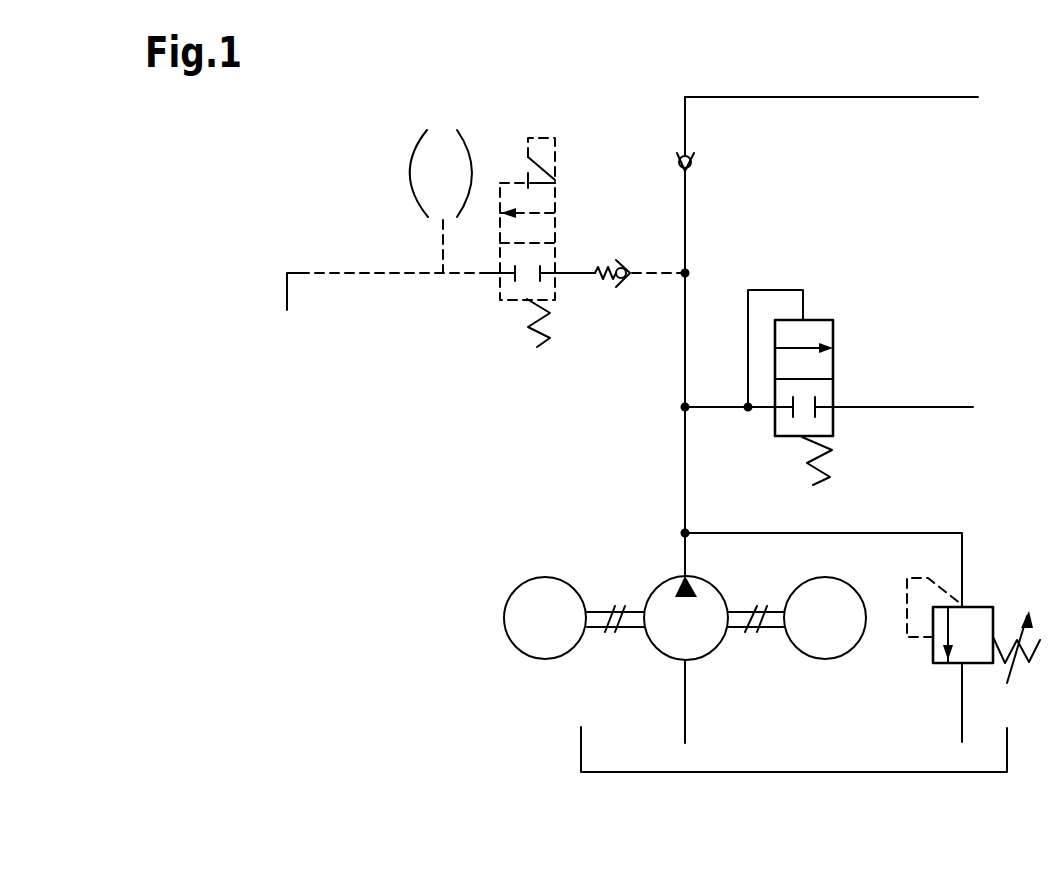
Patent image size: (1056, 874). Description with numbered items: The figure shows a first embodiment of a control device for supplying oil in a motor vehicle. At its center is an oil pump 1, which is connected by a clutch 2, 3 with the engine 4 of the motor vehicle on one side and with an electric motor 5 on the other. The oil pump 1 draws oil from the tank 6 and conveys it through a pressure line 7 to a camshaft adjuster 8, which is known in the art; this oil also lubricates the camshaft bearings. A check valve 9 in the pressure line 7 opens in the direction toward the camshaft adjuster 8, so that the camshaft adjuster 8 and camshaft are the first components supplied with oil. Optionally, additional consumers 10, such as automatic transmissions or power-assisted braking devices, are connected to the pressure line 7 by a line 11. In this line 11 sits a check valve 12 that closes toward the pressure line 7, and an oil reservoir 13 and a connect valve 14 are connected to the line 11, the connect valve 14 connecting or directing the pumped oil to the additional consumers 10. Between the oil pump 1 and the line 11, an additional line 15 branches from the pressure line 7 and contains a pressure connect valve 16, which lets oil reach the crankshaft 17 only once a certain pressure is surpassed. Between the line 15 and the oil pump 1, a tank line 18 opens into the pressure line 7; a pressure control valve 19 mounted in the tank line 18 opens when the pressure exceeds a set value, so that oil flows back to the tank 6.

The oil pump 1 is at (658, 608).
The clutch 2 is at (610, 632).
The clutch 3 is at (758, 607).
The engine 4 is at (833, 648).
The electric motor 5 is at (523, 642).
The tank 6 is at (610, 760).
The pressure line 7 is at (683, 360).
The camshaft adjuster 8 is at (842, 99).
The check valve 9 is at (691, 166).
The additional consumer 10 is at (290, 314).
The line 11 is at (350, 273).
The check valve 12 is at (615, 261).
The oil reservoir 13 is at (422, 163).
The connect valve 14 is at (503, 170).
The additional line 15 is at (870, 405).
The pressure connect valve 16 is at (818, 328).
The crankshaft 17 is at (847, 402).
The tank line 18 is at (910, 532).
The pressure control valve 19 is at (984, 618).